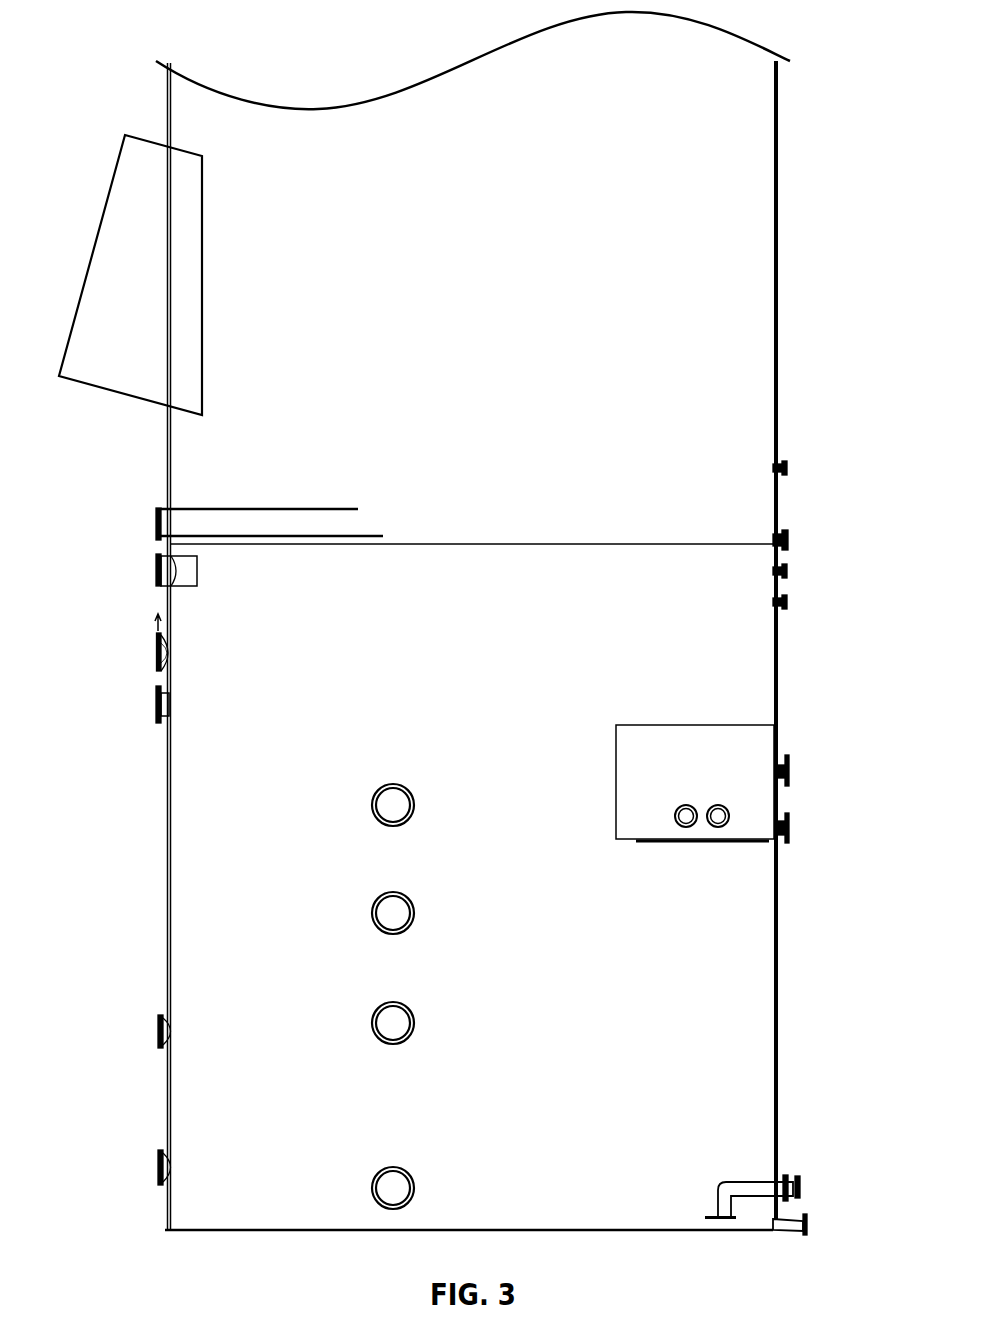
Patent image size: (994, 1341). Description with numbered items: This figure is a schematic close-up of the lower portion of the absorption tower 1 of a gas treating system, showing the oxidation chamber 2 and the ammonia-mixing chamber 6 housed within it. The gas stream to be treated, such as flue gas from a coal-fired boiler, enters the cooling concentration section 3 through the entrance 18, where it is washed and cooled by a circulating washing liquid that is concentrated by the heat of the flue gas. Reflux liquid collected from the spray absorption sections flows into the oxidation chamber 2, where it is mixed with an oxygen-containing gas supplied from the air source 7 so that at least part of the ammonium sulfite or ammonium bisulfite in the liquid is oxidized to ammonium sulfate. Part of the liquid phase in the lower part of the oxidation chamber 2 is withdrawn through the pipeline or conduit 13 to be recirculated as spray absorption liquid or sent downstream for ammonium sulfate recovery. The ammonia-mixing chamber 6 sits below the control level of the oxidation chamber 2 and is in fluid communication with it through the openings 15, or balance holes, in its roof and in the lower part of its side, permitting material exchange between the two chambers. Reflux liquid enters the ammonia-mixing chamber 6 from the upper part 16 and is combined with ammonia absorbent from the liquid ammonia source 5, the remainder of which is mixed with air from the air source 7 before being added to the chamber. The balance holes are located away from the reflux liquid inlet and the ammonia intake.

The absorption tower 1 is at (203, 1228).
The oxidation chamber 2 is at (203, 810).
The cooling concentration section 3 is at (750, 148).
The liquid ammonia source 5 is at (786, 825).
The ammonia-mixing chamber 6 is at (653, 722).
The air source 7 is at (776, 1176).
The pipeline or conduit 13 is at (780, 1230).
The openings 15 is at (683, 815).
The upper part 16 is at (786, 768).
The entrance 18 is at (110, 235).